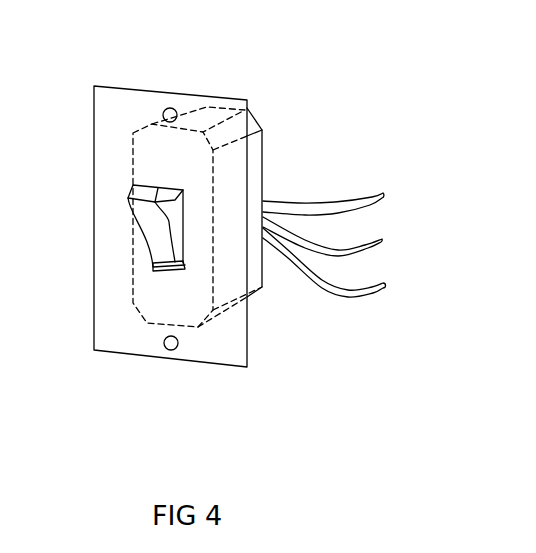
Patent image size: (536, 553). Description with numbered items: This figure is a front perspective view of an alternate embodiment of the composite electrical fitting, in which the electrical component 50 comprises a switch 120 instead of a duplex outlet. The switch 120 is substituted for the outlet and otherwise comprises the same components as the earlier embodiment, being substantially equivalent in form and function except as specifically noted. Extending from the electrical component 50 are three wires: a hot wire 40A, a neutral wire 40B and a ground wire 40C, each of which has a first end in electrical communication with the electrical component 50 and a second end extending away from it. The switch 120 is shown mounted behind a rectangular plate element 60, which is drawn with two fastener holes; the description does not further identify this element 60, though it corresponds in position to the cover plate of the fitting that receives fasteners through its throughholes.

The wall plate 60 is at (125, 335).
The switch 120 is at (257, 145).
The electrical component 50 is at (265, 275).
The hot wire 40A is at (372, 195).
The neutral wire 40B is at (373, 235).
The ground wire 40C is at (373, 282).